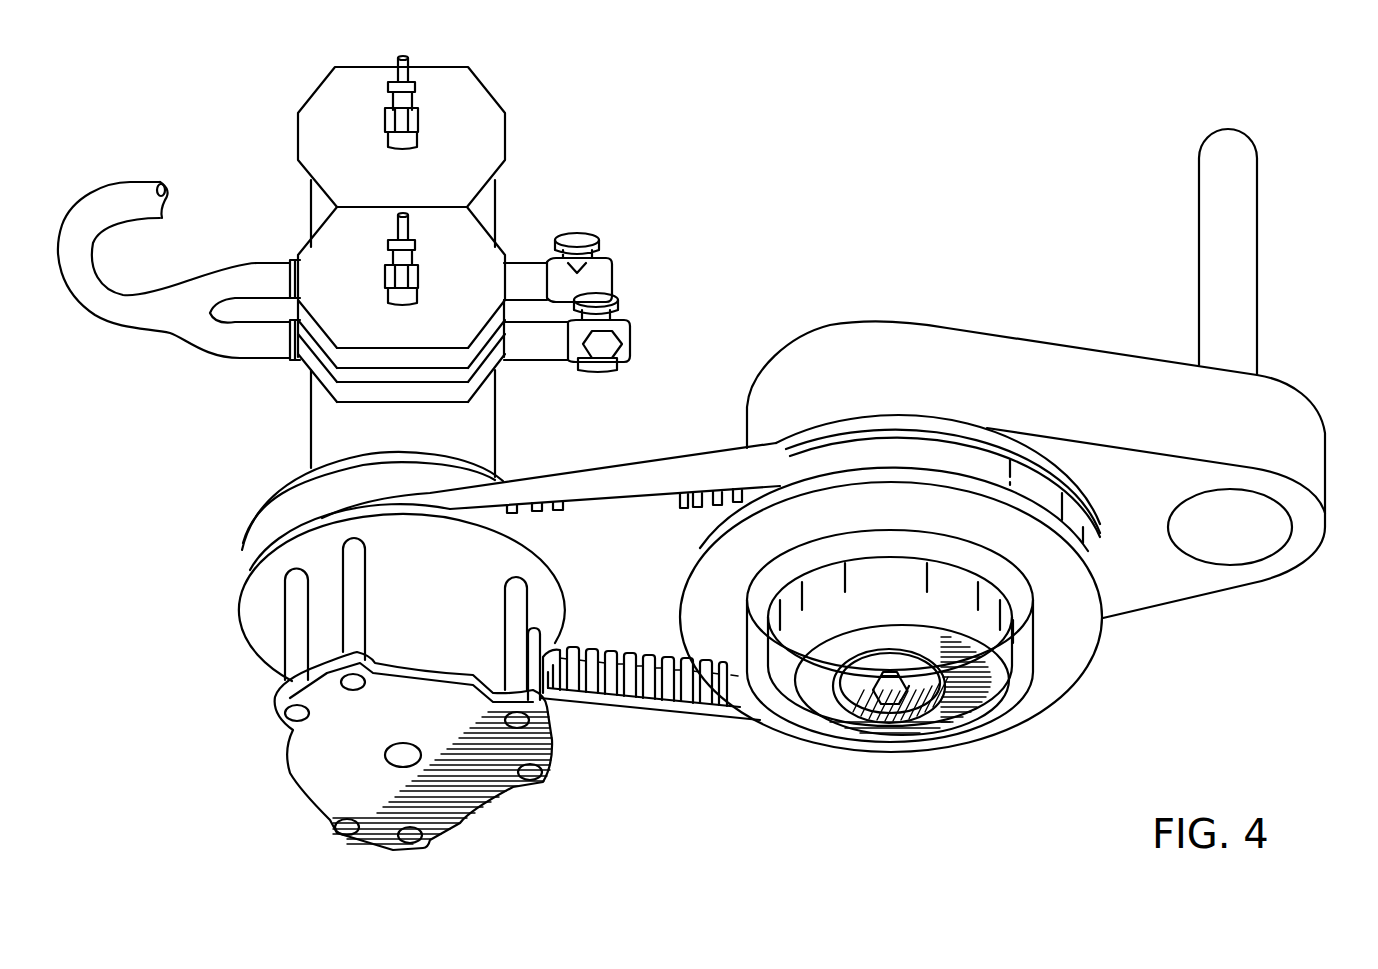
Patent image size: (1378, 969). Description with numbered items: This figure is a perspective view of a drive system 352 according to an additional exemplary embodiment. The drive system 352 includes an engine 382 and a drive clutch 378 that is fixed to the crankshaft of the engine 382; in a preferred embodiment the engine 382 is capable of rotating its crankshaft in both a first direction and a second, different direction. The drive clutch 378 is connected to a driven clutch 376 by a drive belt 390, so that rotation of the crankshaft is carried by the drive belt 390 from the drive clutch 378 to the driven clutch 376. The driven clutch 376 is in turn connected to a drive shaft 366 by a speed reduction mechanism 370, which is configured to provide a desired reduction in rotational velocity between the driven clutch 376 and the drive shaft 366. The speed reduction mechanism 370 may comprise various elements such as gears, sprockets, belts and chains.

The drive system 352 is at (1143, 704).
The drive shaft 366 is at (1257, 200).
The speed reduction mechanism 370 is at (870, 320).
The driven clutch 376 is at (1013, 728).
The drive clutch 378 is at (238, 612).
The engine 382 is at (483, 91).
The drive belt 390 is at (650, 708).